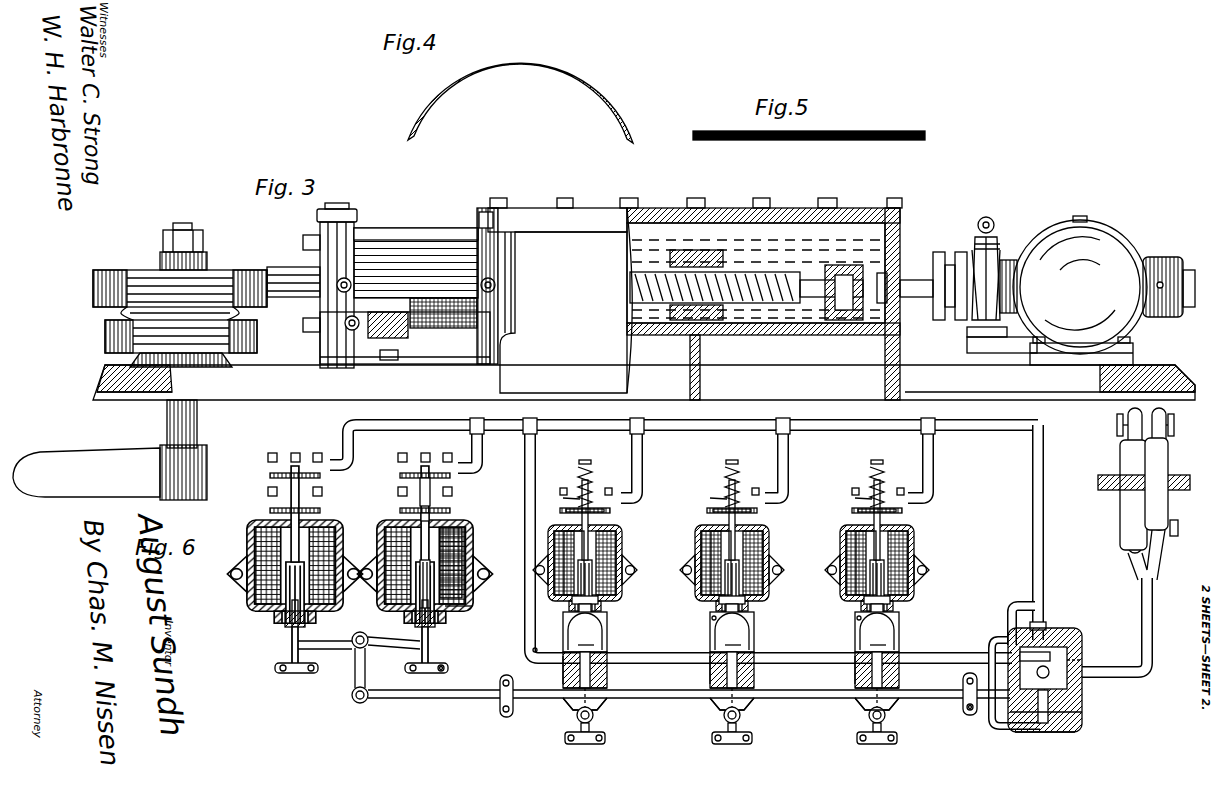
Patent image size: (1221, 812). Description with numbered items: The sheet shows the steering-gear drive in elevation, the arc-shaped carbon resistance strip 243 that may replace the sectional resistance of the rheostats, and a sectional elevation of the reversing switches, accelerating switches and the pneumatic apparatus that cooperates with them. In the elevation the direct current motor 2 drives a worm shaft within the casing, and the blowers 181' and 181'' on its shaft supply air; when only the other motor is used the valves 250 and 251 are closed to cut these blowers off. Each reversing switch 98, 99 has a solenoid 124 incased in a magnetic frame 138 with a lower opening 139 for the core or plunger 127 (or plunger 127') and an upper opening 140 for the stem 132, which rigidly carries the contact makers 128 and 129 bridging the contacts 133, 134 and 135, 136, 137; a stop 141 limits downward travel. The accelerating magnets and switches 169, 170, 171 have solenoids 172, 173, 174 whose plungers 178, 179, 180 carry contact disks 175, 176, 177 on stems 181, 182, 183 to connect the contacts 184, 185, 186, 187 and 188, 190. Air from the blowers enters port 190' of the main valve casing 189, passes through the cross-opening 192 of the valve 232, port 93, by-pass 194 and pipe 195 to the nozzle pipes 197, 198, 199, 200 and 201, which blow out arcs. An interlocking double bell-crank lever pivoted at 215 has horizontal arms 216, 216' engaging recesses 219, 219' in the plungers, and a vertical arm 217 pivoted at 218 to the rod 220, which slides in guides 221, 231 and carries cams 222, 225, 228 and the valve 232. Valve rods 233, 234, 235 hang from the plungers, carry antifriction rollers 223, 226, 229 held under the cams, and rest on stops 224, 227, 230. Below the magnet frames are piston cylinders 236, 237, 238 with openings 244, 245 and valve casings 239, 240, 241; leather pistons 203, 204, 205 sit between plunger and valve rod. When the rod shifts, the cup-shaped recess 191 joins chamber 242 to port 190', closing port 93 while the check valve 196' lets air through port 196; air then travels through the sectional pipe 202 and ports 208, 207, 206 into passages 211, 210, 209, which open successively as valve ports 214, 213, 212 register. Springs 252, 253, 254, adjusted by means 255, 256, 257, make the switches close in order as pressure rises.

In FIG. 3, the direct current motor 2 is at (1097, 290).
In FIG. 4, the carbon resistance strip 243 is at (600, 93).
In FIG. 5, the carbon resistance strip 243 is at (918, 130).
In FIG. 6, the carbon resistance strip 243 is at (558, 618).
In FIG. 3, the valve 250 is at (982, 218).
In FIG. 3, the valve 251 is at (1000, 232).
In FIG. 3, the blower 181' is at (954, 268).
In FIG. 6, the blower 181' is at (1172, 469).
In FIG. 3, the blower 181'' is at (1024, 268).
In FIG. 6, the blower 181'' is at (1136, 498).
In FIG. 6, the reversing switch 98 is at (294, 566).
In FIG. 6, the reversing switch 99 is at (419, 566).
In FIG. 6, the solenoid 124 is at (475, 588).
In FIG. 6, the core or plunger 127 is at (457, 632).
In FIG. 6, the plunger 127' is at (313, 632).
In FIG. 6, the contact maker 128 is at (450, 510).
In FIG. 6, the contact maker 129 is at (320, 476).
In FIG. 6, the stem 132 is at (452, 516).
In FIG. 6, the contact 133 is at (420, 490).
In FIG. 6, the contact 134 is at (452, 491).
In FIG. 6, the contact 135 is at (400, 470).
In FIG. 6, the contact 136 is at (425, 453).
In FIG. 6, the contact 137 is at (449, 453).
In FIG. 6, the magnetic frame 138 is at (475, 540).
In FIG. 6, the lower opening 139 is at (472, 610).
In FIG. 6, the upper opening 140 is at (408, 511).
In FIG. 6, the stop 141 is at (448, 666).
In FIG. 6, the accelerating magnet and switch 169 is at (609, 555).
In FIG. 6, the accelerating magnet and switch 170 is at (753, 556).
In FIG. 6, the accelerating magnet and switch 171 is at (901, 555).
In FIG. 6, the solenoid 172 is at (622, 545).
In FIG. 6, the solenoid 173 is at (769, 545).
In FIG. 6, the solenoid 174 is at (915, 545).
In FIG. 6, the contact disk 175 is at (610, 511).
In FIG. 6, the contact disk 176 is at (757, 511).
In FIG. 6, the contact disk 177 is at (902, 511).
In FIG. 6, the plunger 178 is at (598, 620).
In FIG. 6, the plunger 179 is at (745, 620).
In FIG. 6, the plunger 180 is at (890, 620).
In FIG. 6, the stem 181 is at (869, 490).
In FIG. 6, the stem 182 is at (1150, 450).
In FIG. 6, the stem 183 is at (1116, 428).
In FIG. 6, the contact 184 is at (1160, 548).
In FIG. 6, the contact 185 is at (1135, 556).
In FIG. 6, the contact 186 is at (722, 490).
In FIG. 6, the contact 187 is at (756, 486).
In FIG. 6, the contact 188 is at (1150, 570).
In FIG. 6, the main valve casing 189 is at (1082, 648).
In FIG. 6, the contact 190 is at (908, 476).
In FIG. 6, the port 190' is at (1091, 680).
In FIG. 6, the cup-shaped recess 191 is at (1050, 702).
In FIG. 6, the cross-opening 192 is at (1082, 712).
In FIG. 6, the by-pass 194 is at (990, 720).
In FIG. 6, the pipe 195 is at (1040, 554).
In FIG. 6, the port 196 is at (1041, 622).
In FIG. 6, the check valve 196' is at (1073, 609).
In FIG. 6, the pipe 197 is at (934, 474).
In FIG. 6, the pipe 198 is at (789, 458).
In FIG. 6, the pipe 199 is at (643, 458).
In FIG. 6, the pipe 200 is at (481, 452).
In FIG. 6, the pipe 201 is at (356, 444).
In FIG. 6, the pipe 202 is at (955, 650).
In FIG. 6, the piston 203 is at (605, 636).
In FIG. 6, the piston 204 is at (752, 636).
In FIG. 6, the piston 205 is at (897, 636).
In FIG. 6, the port 206 is at (606, 648).
In FIG. 6, the port 207 is at (753, 648).
In FIG. 6, the port 208 is at (898, 648).
In FIG. 6, the passage 209 is at (598, 668).
In FIG. 6, the passage 210 is at (745, 668).
In FIG. 6, the passage 211 is at (890, 668).
In FIG. 6, the valve port 212 is at (563, 682).
In FIG. 6, the valve port 213 is at (710, 684).
In FIG. 6, the valve port 214 is at (855, 684).
In FIG. 6, the fixed pivot point 215 is at (364, 634).
In FIG. 6, the horizontal arm 216 is at (394, 650).
In FIG. 6, the horizontal arm 216' is at (324, 653).
In FIG. 6, the vertical arm 217 is at (355, 672).
In FIG. 6, the pivot 218 is at (353, 698).
In FIG. 6, the recess 219 is at (448, 653).
In FIG. 6, the recess 219' is at (279, 655).
In FIG. 6, the rod 220 is at (448, 700).
In FIG. 6, the guide 221 is at (503, 704).
In FIG. 6, the cam 222 is at (603, 704).
In FIG. 6, the antifriction roller 223 is at (577, 718).
In FIG. 6, the stop 224 is at (594, 728).
In FIG. 6, the cam 225 is at (750, 704).
In FIG. 6, the antifriction roller 226 is at (741, 718).
In FIG. 6, the stop 227 is at (748, 744).
In FIG. 6, the cam 228 is at (945, 696).
In FIG. 6, the antifriction roller 229 is at (886, 718).
In FIG. 6, the stop 230 is at (893, 744).
In FIG. 6, the guide 231 is at (966, 710).
In FIG. 6, the valve 232 is at (1082, 688).
In FIG. 6, the valve rod 233 is at (592, 688).
In FIG. 6, the valve rod 234 is at (740, 688).
In FIG. 6, the valve rod 235 is at (885, 688).
In FIG. 6, the piston cylinder 236 is at (610, 610).
In FIG. 6, the piston cylinder 237 is at (757, 610).
In FIG. 6, the piston cylinder 238 is at (900, 610).
In FIG. 6, the valve casing 239 is at (563, 670).
In FIG. 6, the valve casing 240 is at (710, 674).
In FIG. 6, the valve casing 241 is at (855, 672).
In FIG. 6, the chamber 242 is at (1046, 654).
In FIG. 6, the opening 244 is at (710, 618).
In FIG. 6, the opening 245 is at (865, 622).
In FIG. 6, the spring 252 is at (855, 497).
In FIG. 6, the spring 253 is at (707, 496).
In FIG. 6, the spring 254 is at (561, 496).
In FIG. 6, the adjusting means 255 is at (882, 458).
In FIG. 6, the adjusting means 256 is at (737, 458).
In FIG. 6, the adjusting means 257 is at (585, 464).
In FIG. 6, the port 93 is at (1048, 725).